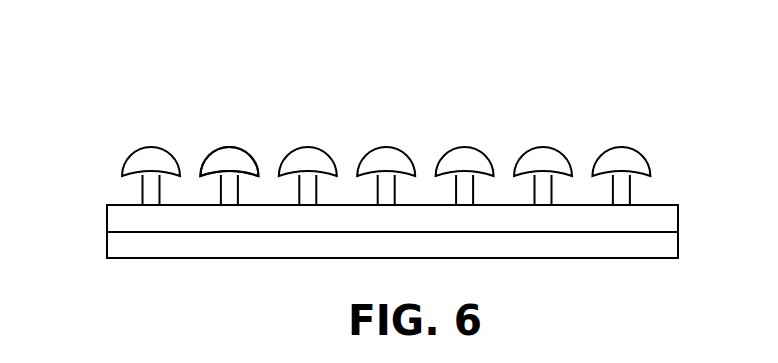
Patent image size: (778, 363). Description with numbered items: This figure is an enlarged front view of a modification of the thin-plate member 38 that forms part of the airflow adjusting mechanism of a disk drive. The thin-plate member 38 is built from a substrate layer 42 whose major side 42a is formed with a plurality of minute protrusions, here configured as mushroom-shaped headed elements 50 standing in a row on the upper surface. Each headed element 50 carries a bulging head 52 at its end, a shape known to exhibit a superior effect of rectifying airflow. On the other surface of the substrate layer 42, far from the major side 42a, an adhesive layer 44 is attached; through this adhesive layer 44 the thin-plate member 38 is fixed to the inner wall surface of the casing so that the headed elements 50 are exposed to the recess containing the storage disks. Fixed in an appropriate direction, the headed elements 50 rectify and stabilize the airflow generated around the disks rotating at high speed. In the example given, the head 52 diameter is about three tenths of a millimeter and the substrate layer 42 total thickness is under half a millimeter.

The thin-plate member 38 is at (382, 168).
The substrate layer 42 is at (382, 224).
The major side 42a is at (656, 204).
The adhesive layer 44 is at (232, 247).
The headed element 50 is at (308, 156).
The head 52 is at (230, 157).